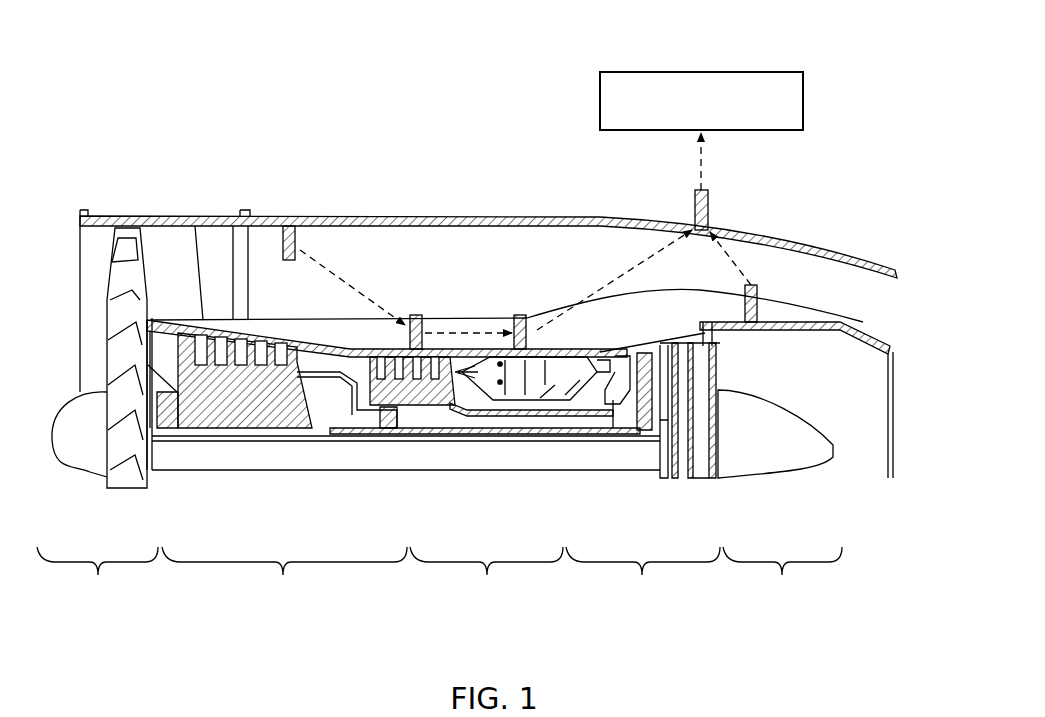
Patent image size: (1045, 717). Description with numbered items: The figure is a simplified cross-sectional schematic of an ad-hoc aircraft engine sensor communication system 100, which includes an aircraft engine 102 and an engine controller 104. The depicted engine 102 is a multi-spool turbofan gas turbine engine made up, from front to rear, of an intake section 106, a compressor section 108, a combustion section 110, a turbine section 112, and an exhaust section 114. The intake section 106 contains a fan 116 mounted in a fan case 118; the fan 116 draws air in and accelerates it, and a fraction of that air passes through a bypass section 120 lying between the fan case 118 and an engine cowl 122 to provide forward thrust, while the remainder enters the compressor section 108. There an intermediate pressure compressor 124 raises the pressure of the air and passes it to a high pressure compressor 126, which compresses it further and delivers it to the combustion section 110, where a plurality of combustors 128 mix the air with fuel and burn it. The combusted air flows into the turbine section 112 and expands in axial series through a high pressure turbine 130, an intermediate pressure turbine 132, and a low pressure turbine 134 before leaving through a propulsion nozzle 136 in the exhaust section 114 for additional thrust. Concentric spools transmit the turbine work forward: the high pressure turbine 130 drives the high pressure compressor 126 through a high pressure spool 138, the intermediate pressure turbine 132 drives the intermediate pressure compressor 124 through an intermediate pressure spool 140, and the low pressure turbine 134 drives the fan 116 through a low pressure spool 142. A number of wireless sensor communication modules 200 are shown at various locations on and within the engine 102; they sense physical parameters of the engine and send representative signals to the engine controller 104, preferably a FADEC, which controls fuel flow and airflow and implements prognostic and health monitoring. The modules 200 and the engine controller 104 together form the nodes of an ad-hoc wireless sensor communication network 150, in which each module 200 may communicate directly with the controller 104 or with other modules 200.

The aircraft engine sensor communication system 100 is at (345, 100).
The aircraft engine 102 is at (285, 185).
The engine controller 104 is at (808, 90).
The intake section 106 is at (97, 578).
The compressor section 108 is at (284, 578).
The combustion section 110 is at (486, 578).
The turbine section 112 is at (643, 578).
The exhaust section 114 is at (782, 578).
The fan 116 is at (115, 320).
The fan case 118 is at (178, 212).
The bypass section 120 is at (418, 228).
The engine cowl 122 is at (480, 318).
The intermediate pressure compressor 124 is at (243, 405).
The high pressure compressor 126 is at (418, 405).
The combustor 128 is at (578, 365).
The high pressure turbine 130 is at (606, 353).
The intermediate pressure turbine 132 is at (654, 355).
The low pressure turbine 134 is at (702, 348).
The propulsion nozzle 136 is at (876, 410).
The high pressure spool 138 is at (494, 418).
The intermediate pressure spool 140 is at (562, 434).
The low pressure spool 142 is at (630, 460).
The ad-hoc wireless sensor communication network 150 is at (518, 135).
The wireless sensor communication module 200 is at (290, 262).